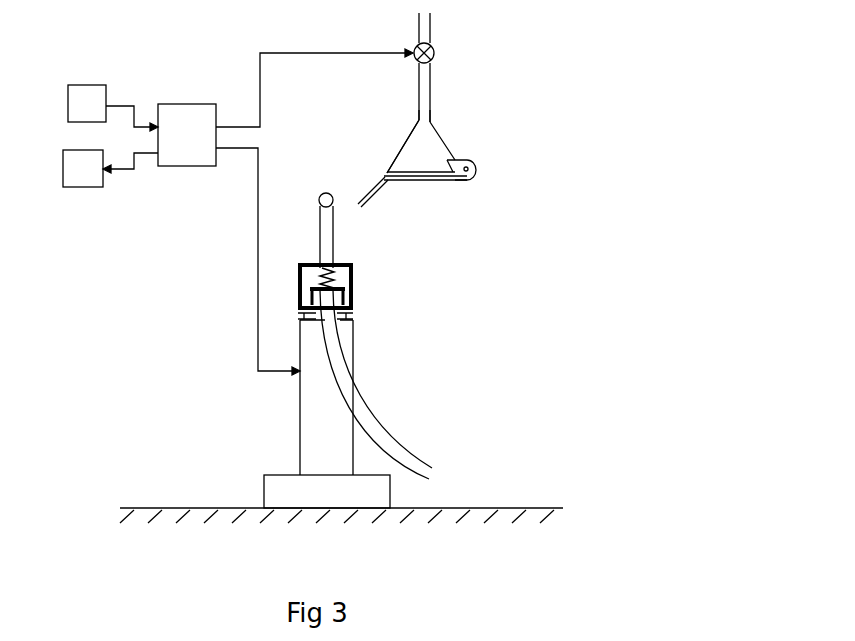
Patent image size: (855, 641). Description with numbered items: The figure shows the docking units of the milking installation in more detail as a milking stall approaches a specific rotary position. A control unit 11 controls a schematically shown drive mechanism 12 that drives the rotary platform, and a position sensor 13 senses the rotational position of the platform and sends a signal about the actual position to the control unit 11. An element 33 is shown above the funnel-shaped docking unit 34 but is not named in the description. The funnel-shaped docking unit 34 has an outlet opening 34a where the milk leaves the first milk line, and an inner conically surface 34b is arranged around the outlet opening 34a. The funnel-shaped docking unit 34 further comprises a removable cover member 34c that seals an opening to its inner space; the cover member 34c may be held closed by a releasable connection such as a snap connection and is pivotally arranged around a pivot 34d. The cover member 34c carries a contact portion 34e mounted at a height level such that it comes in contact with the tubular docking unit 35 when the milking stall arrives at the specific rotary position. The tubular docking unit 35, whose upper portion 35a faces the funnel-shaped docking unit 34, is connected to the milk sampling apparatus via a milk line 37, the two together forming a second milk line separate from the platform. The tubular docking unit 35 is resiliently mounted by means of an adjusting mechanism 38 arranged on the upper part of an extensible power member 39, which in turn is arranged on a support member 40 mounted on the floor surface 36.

The control unit 11 is at (182, 118).
The drive mechanism 12 is at (82, 177).
The position sensor 13 is at (85, 97).
The valve 33 is at (434, 46).
The funnel-shaped docking unit 34 is at (427, 138).
The outlet opening 34a is at (423, 118).
The inner conically surface 34b is at (397, 150).
The removable cover member 34c is at (428, 183).
The pivot 34d is at (476, 173).
The contact portion 34e is at (370, 198).
The tubular docking unit 35 is at (325, 223).
The rod head 35a is at (325, 192).
The floor surface 36 is at (192, 508).
The milk line 37 is at (372, 433).
The adjusting mechanism 38 is at (340, 285).
The extensible power member 39 is at (317, 412).
The support member 40 is at (300, 495).